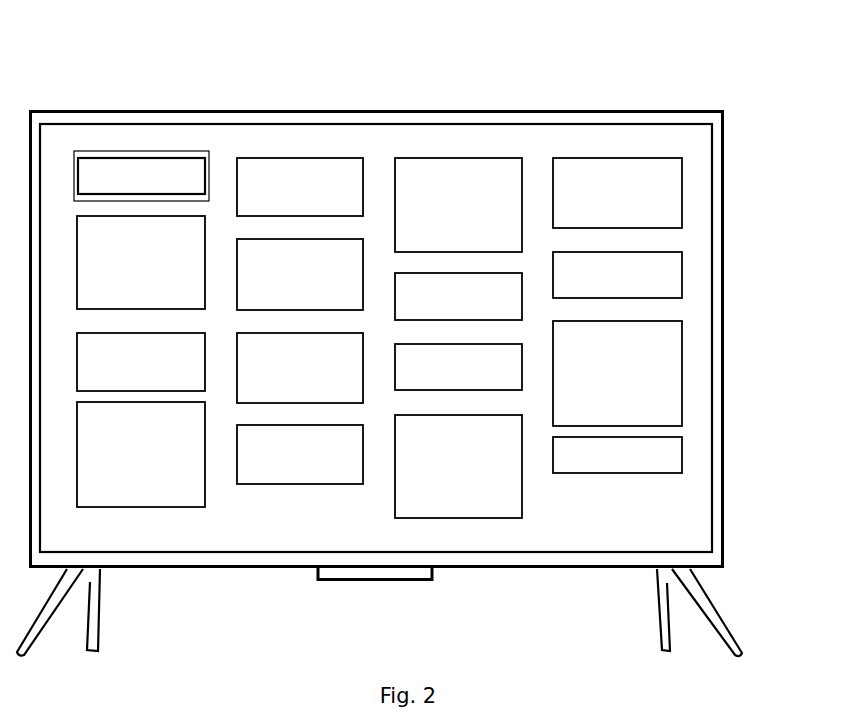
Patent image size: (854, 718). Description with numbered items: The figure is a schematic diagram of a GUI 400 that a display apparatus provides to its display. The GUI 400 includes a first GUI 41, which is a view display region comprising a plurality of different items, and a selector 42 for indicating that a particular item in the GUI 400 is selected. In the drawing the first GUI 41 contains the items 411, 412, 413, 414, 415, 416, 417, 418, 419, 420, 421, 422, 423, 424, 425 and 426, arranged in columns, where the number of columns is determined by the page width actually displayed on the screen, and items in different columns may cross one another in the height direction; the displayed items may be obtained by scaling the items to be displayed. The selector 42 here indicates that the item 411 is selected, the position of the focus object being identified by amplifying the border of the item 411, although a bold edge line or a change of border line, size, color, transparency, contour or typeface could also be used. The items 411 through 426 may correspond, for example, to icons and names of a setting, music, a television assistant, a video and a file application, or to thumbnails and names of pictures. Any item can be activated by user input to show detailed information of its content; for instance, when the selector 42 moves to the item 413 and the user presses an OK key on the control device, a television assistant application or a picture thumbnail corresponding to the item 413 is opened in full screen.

The GUI 400 is at (387, 79).
The first GUI 41 is at (694, 236).
The selector 42 is at (125, 151).
The item 411 is at (141, 176).
The item 412 is at (300, 187).
The item 413 is at (458, 205).
The item 414 is at (617, 193).
The item 415 is at (141, 262).
The item 416 is at (300, 274).
The item 417 is at (458, 296).
The item 418 is at (617, 275).
The item 419 is at (141, 362).
The item 420 is at (300, 368).
The item 421 is at (458, 367).
The item 422 is at (617, 373).
The item 423 is at (141, 454).
The item 424 is at (300, 454).
The item 425 is at (458, 466).
The item 426 is at (617, 455).